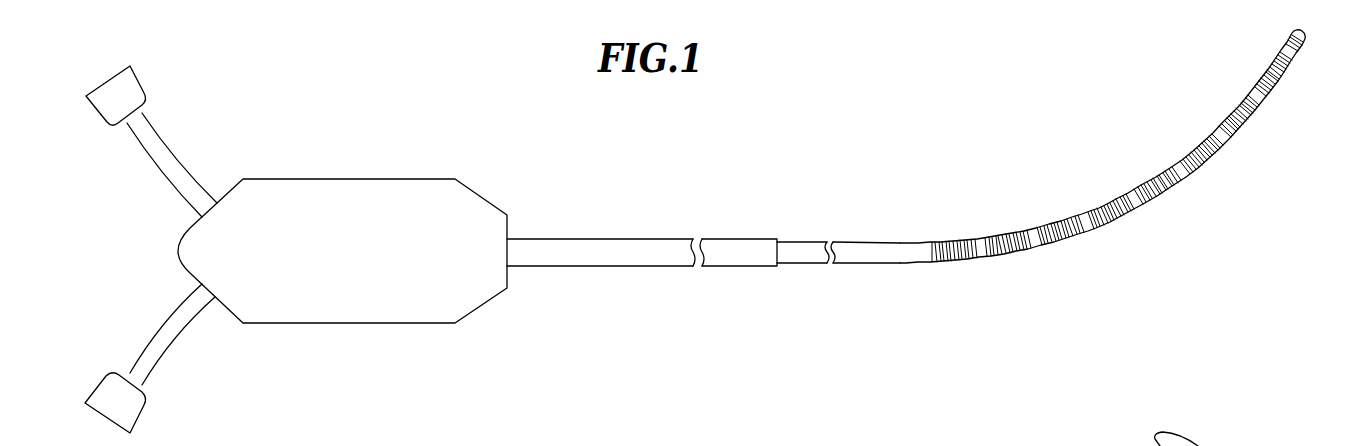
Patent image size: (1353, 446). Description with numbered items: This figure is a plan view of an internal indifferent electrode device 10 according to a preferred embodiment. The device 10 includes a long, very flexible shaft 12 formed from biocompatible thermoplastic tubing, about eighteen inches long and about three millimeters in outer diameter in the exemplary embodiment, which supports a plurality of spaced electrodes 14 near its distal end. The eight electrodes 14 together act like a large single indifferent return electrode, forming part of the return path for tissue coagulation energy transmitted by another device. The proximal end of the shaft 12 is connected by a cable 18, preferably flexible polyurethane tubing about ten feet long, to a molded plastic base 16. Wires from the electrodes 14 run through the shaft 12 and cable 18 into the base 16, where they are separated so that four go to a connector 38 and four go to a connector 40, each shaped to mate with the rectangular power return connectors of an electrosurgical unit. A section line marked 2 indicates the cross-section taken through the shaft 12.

The internal indifferent electrode device 10 is at (783, 168).
The shaft 12 is at (885, 263).
The electrodes 14 is at (1010, 251).
The base 16 is at (373, 307).
The cable 18 is at (753, 267).
The connector 38 is at (133, 92).
The connector 40 is at (127, 405).
The section line 2- 2 is at (594, 188).